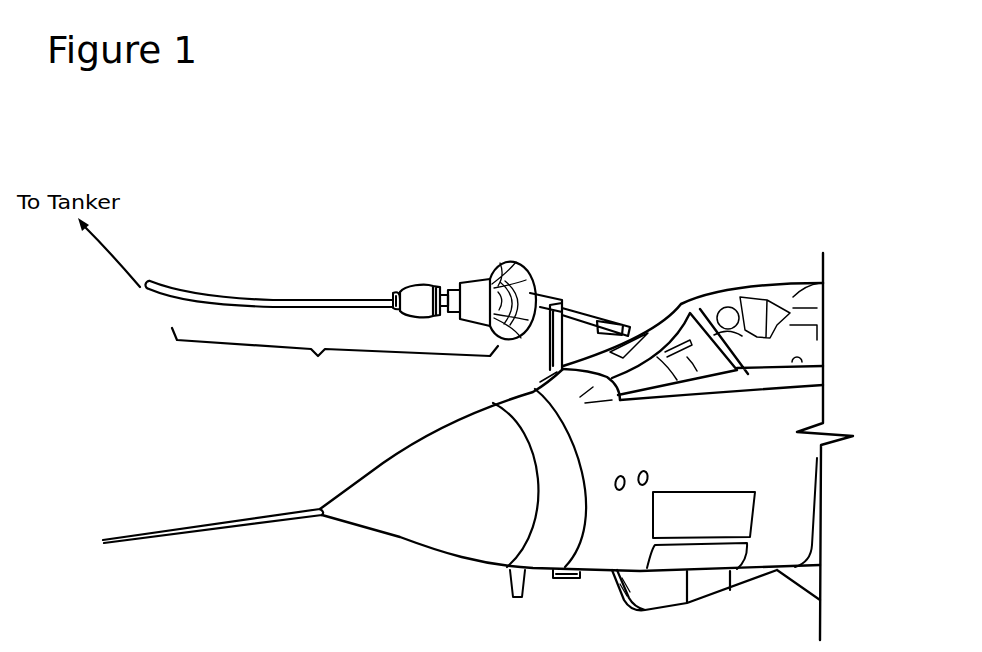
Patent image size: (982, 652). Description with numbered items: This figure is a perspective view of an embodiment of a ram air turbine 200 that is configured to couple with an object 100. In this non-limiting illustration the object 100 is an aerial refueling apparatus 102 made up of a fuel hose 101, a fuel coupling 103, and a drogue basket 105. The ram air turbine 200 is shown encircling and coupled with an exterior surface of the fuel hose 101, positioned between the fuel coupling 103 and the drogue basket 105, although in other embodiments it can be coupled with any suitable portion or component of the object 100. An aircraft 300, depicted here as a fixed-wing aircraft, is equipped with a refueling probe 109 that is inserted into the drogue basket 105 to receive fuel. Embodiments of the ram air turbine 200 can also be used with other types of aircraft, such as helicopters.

The object 100 is at (478, 186).
The fuel hose 101 is at (248, 292).
The aerial refueling apparatus 102 is at (335, 357).
The fuel coupling 103 is at (393, 291).
The drogue basket 105 is at (510, 266).
The refueling probe 109 is at (587, 314).
The ram air turbine 200 is at (417, 270).
The aircraft 300 is at (790, 478).